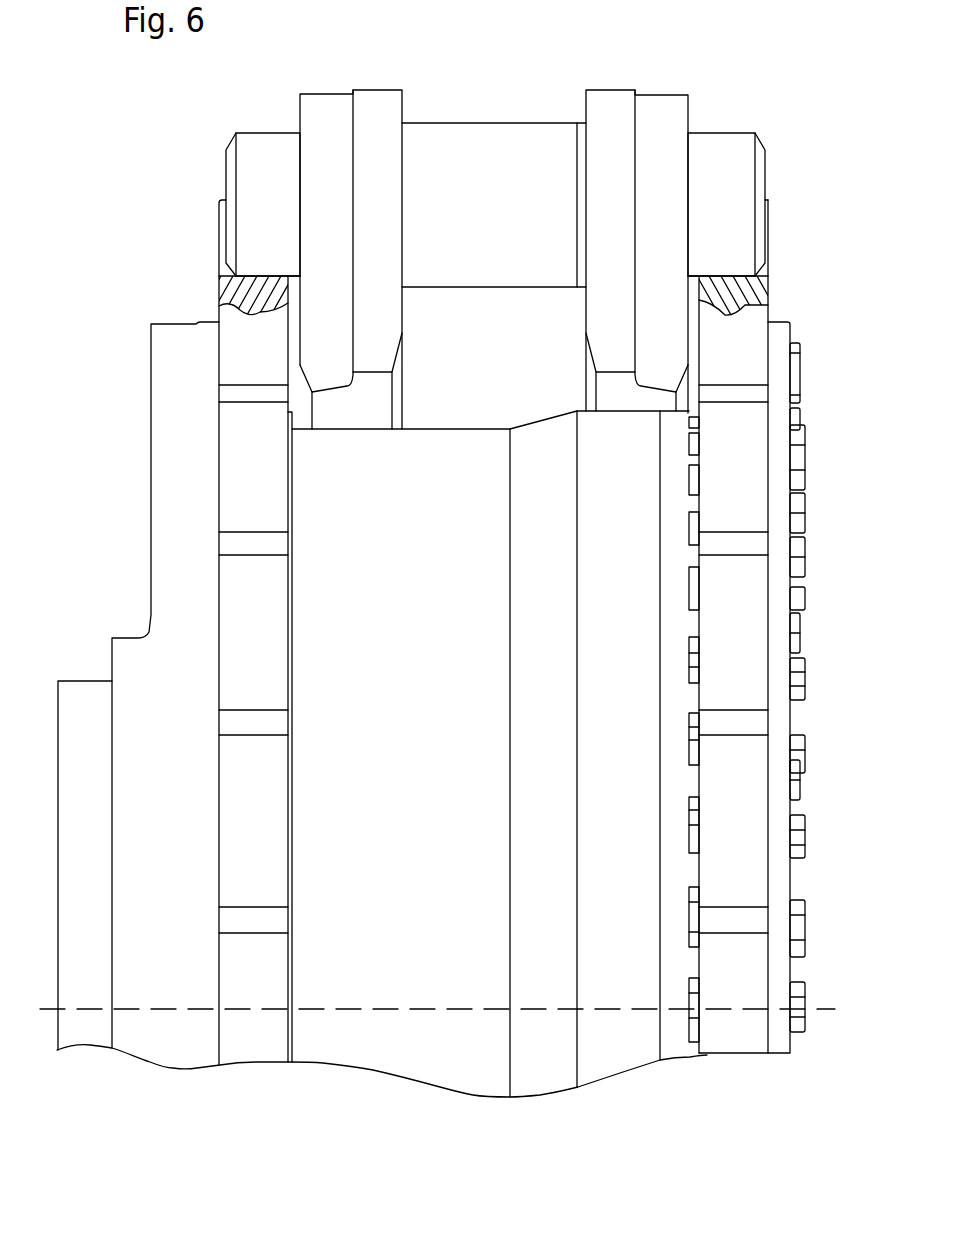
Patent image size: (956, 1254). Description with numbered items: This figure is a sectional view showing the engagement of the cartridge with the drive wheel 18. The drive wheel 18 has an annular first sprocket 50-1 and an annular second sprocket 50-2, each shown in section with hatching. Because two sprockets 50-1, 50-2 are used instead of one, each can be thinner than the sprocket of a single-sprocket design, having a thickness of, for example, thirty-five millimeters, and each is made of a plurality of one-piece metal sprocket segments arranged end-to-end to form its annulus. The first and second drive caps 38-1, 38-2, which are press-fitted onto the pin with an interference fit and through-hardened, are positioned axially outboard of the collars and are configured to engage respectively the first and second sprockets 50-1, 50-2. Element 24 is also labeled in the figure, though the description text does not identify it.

The drive wheel 18 is at (803, 335).
The lock nut 24 is at (258, 138).
The first drive cap 38-1 is at (732, 132).
The second drive cap 38-2 is at (230, 175).
The first sprocket 50-1 is at (765, 284).
The second sprocket 50-2 is at (223, 290).